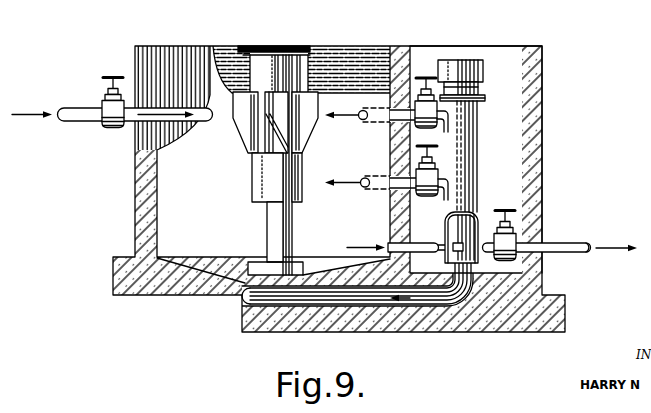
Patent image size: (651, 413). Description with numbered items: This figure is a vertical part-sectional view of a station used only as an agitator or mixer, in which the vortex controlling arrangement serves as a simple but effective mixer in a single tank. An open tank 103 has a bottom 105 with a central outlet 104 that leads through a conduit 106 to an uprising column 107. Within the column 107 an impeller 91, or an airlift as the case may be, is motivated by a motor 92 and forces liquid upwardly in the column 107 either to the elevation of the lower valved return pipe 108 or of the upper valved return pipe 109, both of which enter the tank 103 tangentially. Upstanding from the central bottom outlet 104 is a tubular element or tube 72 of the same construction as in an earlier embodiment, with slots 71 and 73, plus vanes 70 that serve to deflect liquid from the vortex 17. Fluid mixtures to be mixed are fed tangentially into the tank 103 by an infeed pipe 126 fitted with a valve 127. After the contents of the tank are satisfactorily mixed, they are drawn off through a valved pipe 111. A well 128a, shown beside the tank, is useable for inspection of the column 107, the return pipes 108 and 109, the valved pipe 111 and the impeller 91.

The infeed pipe 126 is at (92, 110).
The valve 127 is at (111, 128).
The vortex 17 is at (247, 126).
The slots 71 is at (272, 153).
The vanes 70 is at (304, 121).
The tubular element 72 is at (258, 187).
The slots 73 is at (272, 232).
The open tank 103 is at (140, 194).
The bottom 105 is at (155, 296).
The central outlet 104 is at (241, 313).
The conduit 106 is at (425, 308).
The upper valved return pipe 109 is at (382, 124).
The lower valved return pipe 108 is at (383, 192).
The motor 92 is at (452, 62).
The well 128a is at (505, 52).
The uprising column 107 is at (466, 150).
The impeller 91 is at (449, 246).
The valved pipe 111 is at (568, 254).